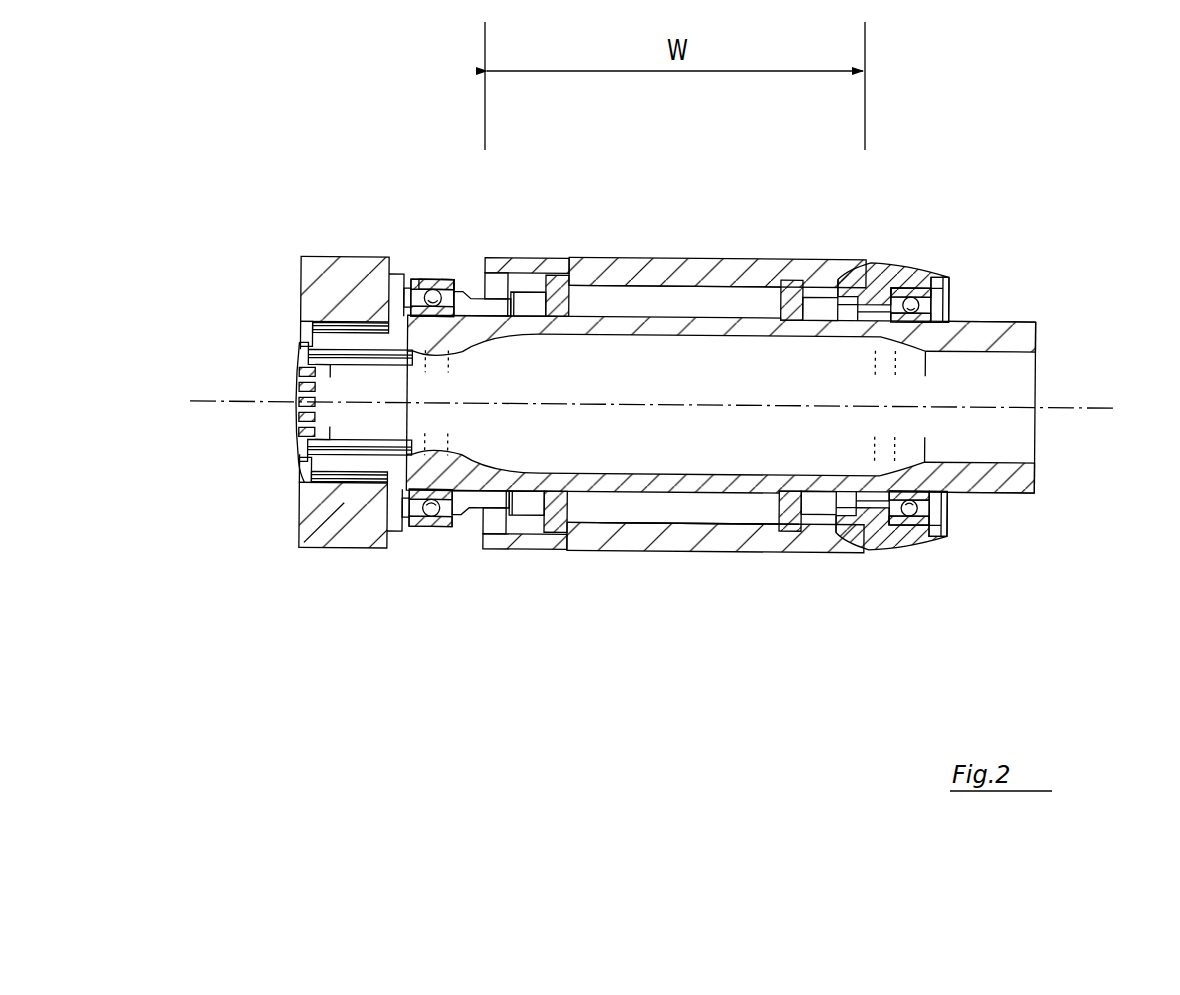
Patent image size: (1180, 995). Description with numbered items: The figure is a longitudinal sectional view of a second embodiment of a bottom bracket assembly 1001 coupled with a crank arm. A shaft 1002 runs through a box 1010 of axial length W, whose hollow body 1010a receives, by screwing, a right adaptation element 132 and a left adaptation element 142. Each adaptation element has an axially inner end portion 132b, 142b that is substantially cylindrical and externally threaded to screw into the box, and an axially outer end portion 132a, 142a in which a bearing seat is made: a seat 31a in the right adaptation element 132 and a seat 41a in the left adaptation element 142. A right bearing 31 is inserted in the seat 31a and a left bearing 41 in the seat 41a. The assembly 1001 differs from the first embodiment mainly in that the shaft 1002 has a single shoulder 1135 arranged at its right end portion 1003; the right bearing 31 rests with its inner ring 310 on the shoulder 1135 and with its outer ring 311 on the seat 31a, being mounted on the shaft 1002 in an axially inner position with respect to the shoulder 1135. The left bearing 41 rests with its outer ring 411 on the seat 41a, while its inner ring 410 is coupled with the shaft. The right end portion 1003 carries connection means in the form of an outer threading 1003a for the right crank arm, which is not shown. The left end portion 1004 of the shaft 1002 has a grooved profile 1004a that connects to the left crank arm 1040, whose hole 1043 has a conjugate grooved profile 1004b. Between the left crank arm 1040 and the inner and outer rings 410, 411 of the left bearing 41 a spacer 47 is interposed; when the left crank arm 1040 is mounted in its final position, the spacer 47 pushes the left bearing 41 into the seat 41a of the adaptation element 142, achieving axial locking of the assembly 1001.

The bottom bracket assembly 1001 is at (745, 578).
The shaft 1002 is at (680, 314).
The right end portion 1003 is at (990, 522).
The outer threading 1003a is at (1010, 336).
The left end portion 1004 is at (396, 552).
The grooved profile 1004a is at (335, 528).
The grooved profile 1004b is at (300, 458).
The box 1010 is at (592, 555).
The hollow body 1010a is at (697, 530).
The left crank arm 1040 is at (290, 535).
The hole 1043 is at (300, 340).
The shoulder 1135 is at (960, 310).
The right adaptation element 132 is at (868, 262).
The axially outer end portion 132a is at (930, 283).
The axially inner end portion 132b is at (823, 290).
The left adaptation element 142 is at (462, 272).
The axially outer end portion 142a is at (427, 277).
The axially inner end portion 142b is at (540, 288).
The right bearing 31 is at (936, 286).
The inner ring 310 is at (896, 328).
The outer ring 311 is at (906, 284).
The seat 31a is at (893, 505).
The left bearing 41 is at (406, 276).
The inner ring 410 is at (440, 322).
The outer ring 411 is at (430, 272).
The seat 41a is at (443, 505).
The spacer 47 is at (396, 283).